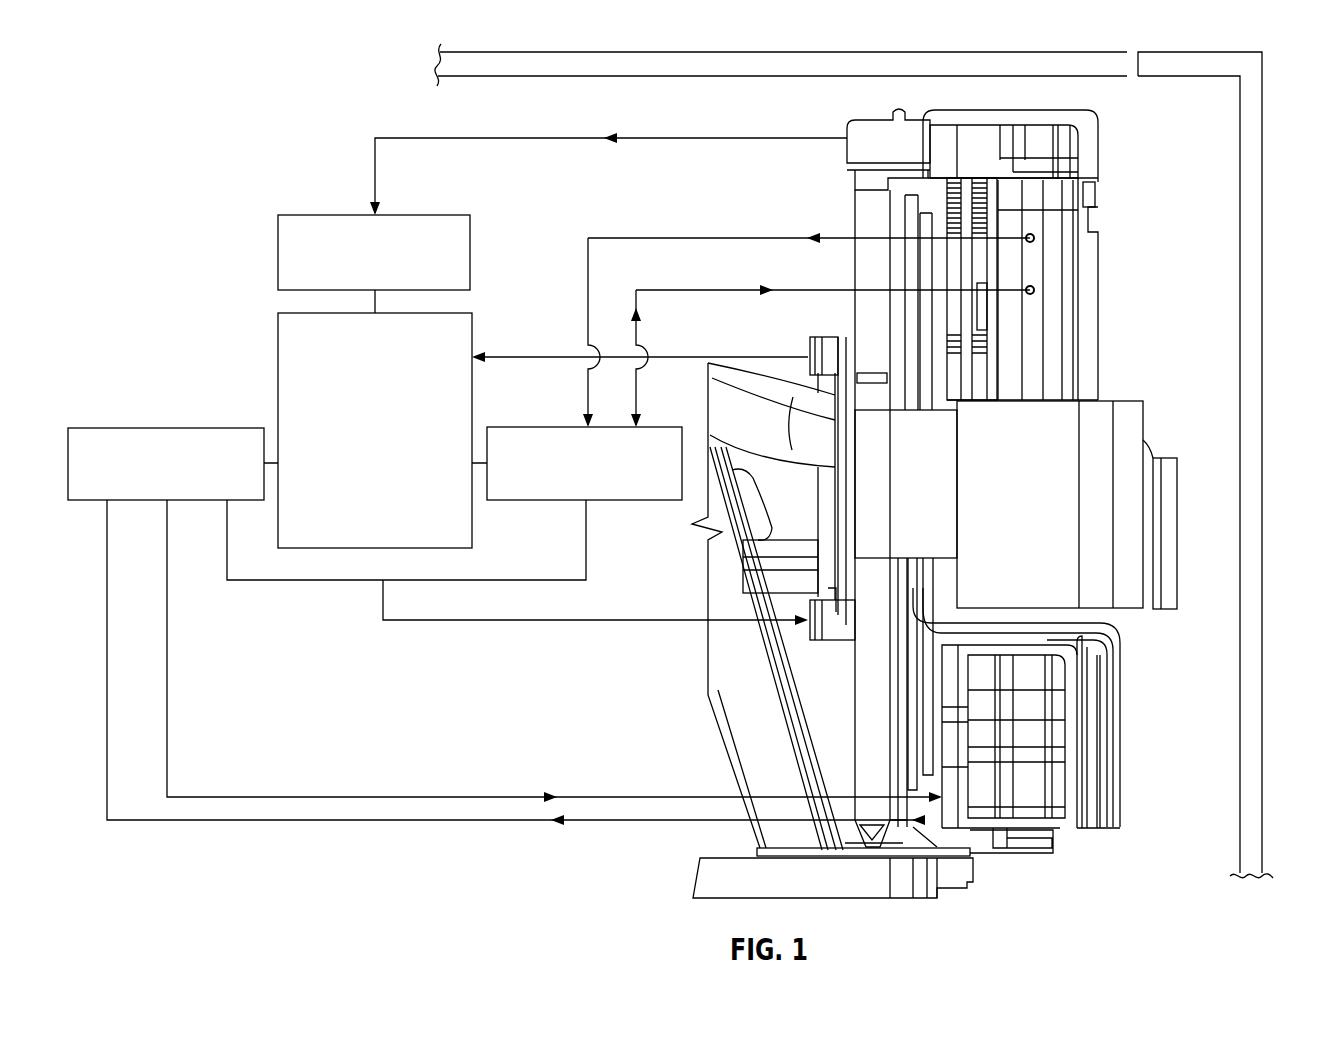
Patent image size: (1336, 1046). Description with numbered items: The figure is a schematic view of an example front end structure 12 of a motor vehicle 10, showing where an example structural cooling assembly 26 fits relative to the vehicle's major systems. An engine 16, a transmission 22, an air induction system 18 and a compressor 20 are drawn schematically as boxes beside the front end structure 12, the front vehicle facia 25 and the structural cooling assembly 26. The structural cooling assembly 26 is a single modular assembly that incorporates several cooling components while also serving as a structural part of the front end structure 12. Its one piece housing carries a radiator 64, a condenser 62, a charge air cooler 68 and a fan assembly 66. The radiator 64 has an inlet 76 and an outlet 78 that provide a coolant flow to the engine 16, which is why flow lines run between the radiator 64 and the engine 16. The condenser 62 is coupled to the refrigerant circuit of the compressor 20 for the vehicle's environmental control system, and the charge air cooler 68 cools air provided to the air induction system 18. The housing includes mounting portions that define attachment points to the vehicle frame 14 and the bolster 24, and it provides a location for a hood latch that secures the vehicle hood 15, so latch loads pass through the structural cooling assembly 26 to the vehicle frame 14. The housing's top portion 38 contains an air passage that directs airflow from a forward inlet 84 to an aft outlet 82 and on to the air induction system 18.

The vehicle 10 is at (226, 114).
The front end structure 12 is at (706, 908).
The vehicle frame 14 is at (851, 893).
The vehicle hood 15 is at (704, 70).
The engine 16 is at (335, 549).
The air induction system 18 is at (335, 213).
The compressor 20 is at (543, 427).
The transmission 22 is at (125, 428).
The bolster 24 is at (1120, 400).
The front vehicle facia 25 is at (1268, 274).
The structural cooling assembly 26 is at (1124, 230).
The top portion 38 is at (970, 147).
The condenser 62 is at (1053, 310).
The radiator 64 is at (868, 704).
The fan assembly 66 is at (920, 235).
The charge air cooler 68 is at (1055, 833).
The inlet 76 is at (832, 344).
The outlet 78 is at (828, 627).
The aft outlet 82 is at (851, 133).
The forward inlet 84 is at (1097, 152).